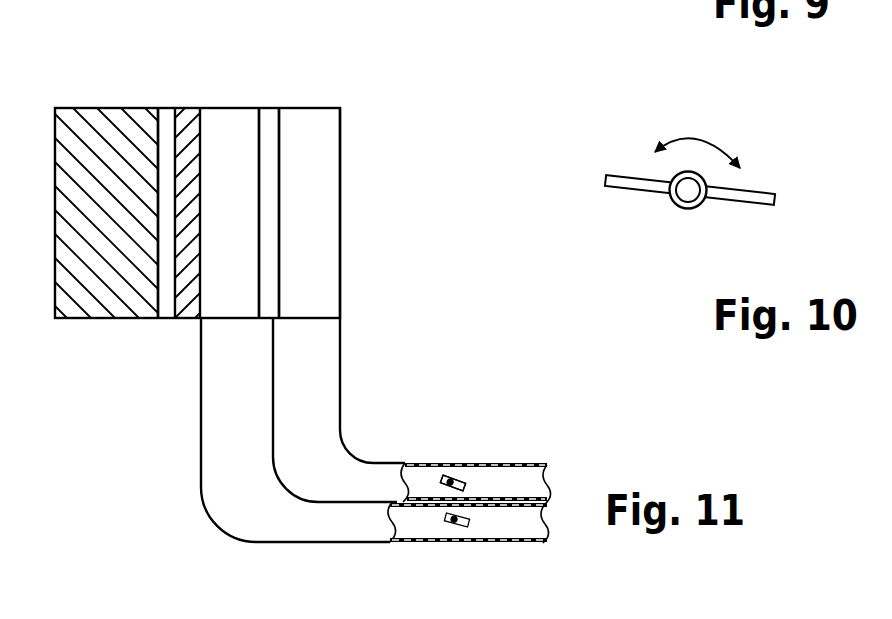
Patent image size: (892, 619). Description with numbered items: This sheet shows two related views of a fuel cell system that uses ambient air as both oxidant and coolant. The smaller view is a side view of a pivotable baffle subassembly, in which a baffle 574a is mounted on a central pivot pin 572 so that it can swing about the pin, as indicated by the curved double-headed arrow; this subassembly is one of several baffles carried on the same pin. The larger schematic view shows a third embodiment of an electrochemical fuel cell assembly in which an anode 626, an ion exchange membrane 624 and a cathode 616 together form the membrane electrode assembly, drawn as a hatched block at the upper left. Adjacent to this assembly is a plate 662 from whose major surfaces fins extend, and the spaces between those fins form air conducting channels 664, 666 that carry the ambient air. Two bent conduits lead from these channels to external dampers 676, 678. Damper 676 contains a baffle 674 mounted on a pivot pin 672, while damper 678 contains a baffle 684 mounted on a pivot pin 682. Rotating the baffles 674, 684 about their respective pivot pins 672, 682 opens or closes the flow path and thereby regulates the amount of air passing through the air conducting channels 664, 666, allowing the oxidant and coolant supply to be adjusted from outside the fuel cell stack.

In FIG. 10, the central pivot pin 572 is at (687, 195).
In FIG. 10, the baffle 574a is at (757, 200).
In FIG. 11, the cathode 616 is at (182, 117).
In FIG. 11, the ion exchange membrane 624 is at (163, 117).
In FIG. 11, the anode 626 is at (88, 122).
In FIG. 11, the plate 662 is at (273, 113).
In FIG. 11, the air conducting channel 664 is at (325, 117).
In FIG. 11, the air conducting channel 666 is at (240, 118).
In FIG. 11, the pivot pin 672 is at (460, 525).
In FIG. 11, the baffle 674 is at (448, 528).
In FIG. 11, the external damper 676 is at (222, 507).
In FIG. 11, the external damper 678 is at (332, 370).
In FIG. 11, the pivot pin 682 is at (460, 478).
In FIG. 11, the baffle 684 is at (445, 480).